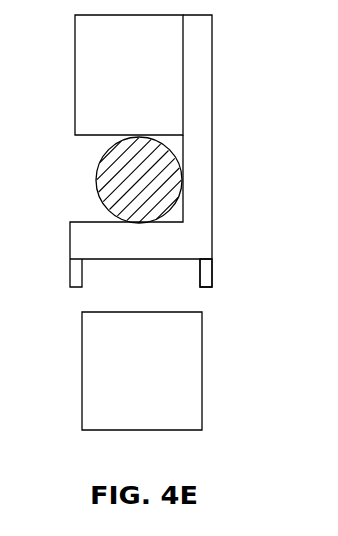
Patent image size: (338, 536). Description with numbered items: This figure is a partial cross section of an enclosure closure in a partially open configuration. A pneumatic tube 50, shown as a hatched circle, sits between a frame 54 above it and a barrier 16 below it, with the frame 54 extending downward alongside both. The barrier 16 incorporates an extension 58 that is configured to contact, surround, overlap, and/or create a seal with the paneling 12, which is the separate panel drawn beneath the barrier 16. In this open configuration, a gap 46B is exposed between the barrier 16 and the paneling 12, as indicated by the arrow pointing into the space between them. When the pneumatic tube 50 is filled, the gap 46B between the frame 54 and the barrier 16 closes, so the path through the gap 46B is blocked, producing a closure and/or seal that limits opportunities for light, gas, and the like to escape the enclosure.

The frame 54 is at (129, 75).
The barrier 16 is at (141, 151).
The pneumatic tube 50 is at (97, 186).
The extension 58 is at (212, 273).
The gap 46B is at (212, 304).
The paneling 12 is at (142, 371).